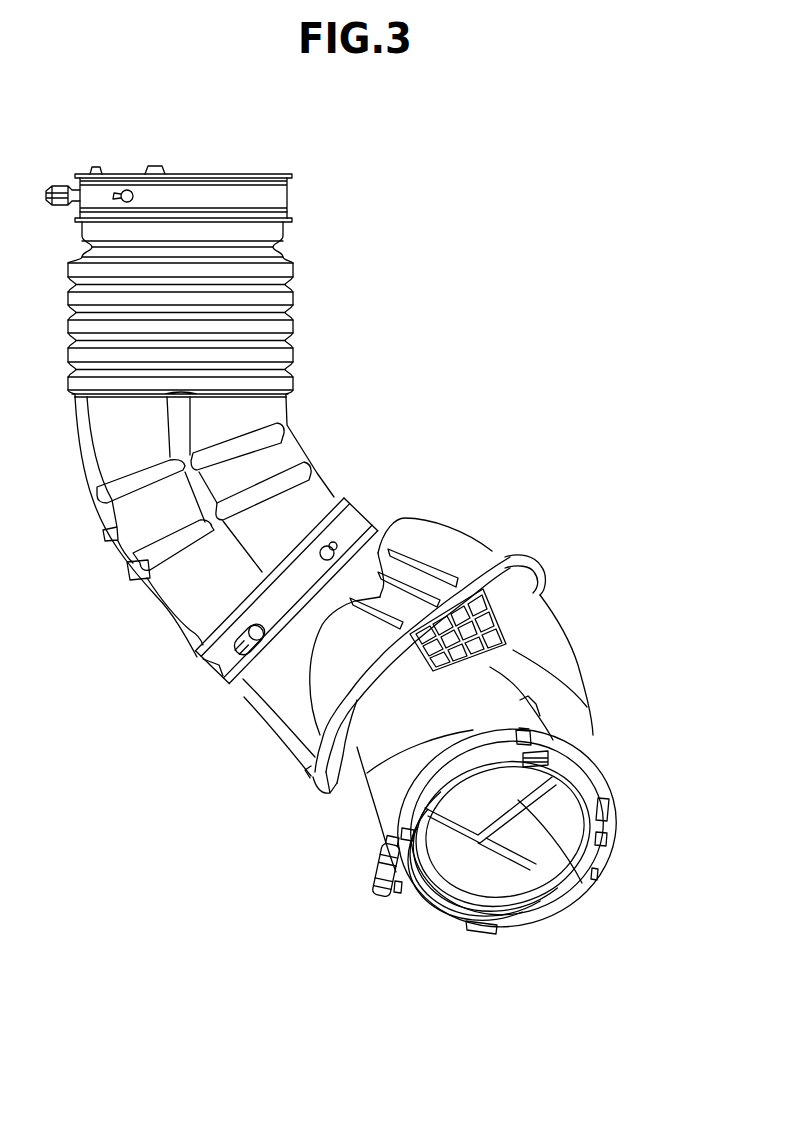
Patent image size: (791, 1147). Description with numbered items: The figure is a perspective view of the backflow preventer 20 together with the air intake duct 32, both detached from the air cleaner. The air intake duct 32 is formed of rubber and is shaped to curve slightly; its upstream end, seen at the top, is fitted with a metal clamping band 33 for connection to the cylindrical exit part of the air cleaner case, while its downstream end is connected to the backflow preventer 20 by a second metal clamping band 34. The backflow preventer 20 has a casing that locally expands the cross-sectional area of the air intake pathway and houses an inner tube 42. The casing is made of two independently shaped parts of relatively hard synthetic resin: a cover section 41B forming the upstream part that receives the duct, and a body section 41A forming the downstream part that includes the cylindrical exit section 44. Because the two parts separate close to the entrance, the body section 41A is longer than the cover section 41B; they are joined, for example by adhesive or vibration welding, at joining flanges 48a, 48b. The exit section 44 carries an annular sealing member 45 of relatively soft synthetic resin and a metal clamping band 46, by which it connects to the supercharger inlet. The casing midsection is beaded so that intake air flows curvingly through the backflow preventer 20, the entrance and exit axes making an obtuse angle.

The backflow preventer 20 is at (551, 576).
The air intake duct 32 is at (257, 413).
The metal clamping band 33 is at (278, 197).
The metal clamping band 34 is at (353, 530).
The body section 41A is at (353, 787).
The cover section 41B is at (277, 693).
The inner tube 42 is at (580, 877).
The exit section 44 is at (528, 877).
The sealing member 45 is at (590, 783).
The metal clamping band 46 is at (557, 747).
The joining flange 48a is at (330, 793).
The joining flange 48b is at (307, 770).